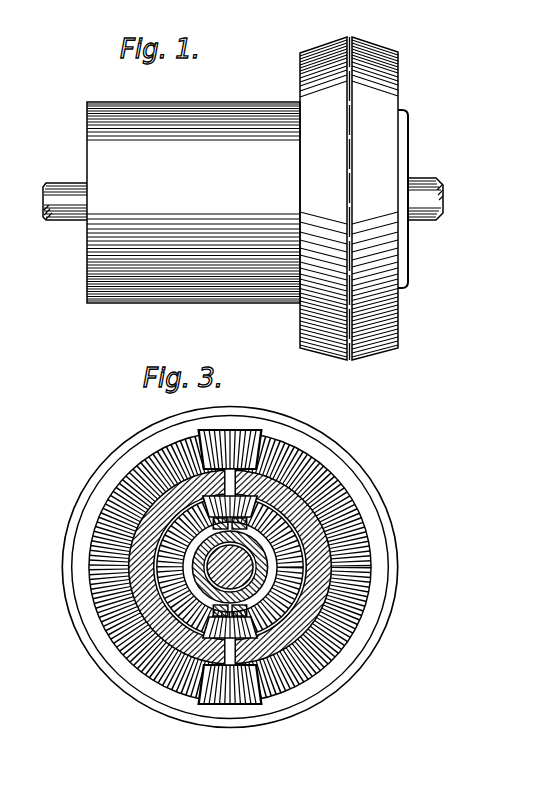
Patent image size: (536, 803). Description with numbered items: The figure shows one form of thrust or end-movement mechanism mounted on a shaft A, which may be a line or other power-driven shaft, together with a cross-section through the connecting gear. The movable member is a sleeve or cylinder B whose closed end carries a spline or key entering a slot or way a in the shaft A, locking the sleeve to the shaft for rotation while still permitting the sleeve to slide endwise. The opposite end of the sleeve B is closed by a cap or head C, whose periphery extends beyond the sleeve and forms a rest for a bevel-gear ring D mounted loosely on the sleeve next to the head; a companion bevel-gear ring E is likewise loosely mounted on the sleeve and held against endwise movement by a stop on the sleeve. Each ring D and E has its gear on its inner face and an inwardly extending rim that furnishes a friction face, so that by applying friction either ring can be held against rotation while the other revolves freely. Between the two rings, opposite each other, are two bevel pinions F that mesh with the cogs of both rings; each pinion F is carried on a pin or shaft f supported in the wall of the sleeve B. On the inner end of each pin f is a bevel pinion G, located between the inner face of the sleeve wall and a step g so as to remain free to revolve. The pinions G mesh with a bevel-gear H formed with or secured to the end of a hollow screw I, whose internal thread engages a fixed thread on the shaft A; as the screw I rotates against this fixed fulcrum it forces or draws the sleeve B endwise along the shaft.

In FIG. 1, the shaft A is at (448, 189).
In FIG. 3, the shaft A is at (147, 577).
In FIG. 1, the slot or way a is at (43, 188).
In FIG. 1, the sleeve or cylinder B is at (193, 188).
In FIG. 3, the sleeve or cylinder B is at (280, 567).
In FIG. 1, the cap or head C is at (415, 199).
In FIG. 1, the bevel-gear ring D is at (398, 78).
In FIG. 1, the companion bevel-gear ring E is at (300, 78).
In FIG. 3, the bevel pinion or gear F is at (276, 551).
In FIG. 3, the pin or shaft f is at (222, 572).
In FIG. 3, the bevel gear or pinion G is at (253, 567).
In FIG. 3, the step g is at (148, 567).
In FIG. 3, the bevel-gear H is at (291, 567).
In FIG. 3, the hollow screw I is at (217, 567).